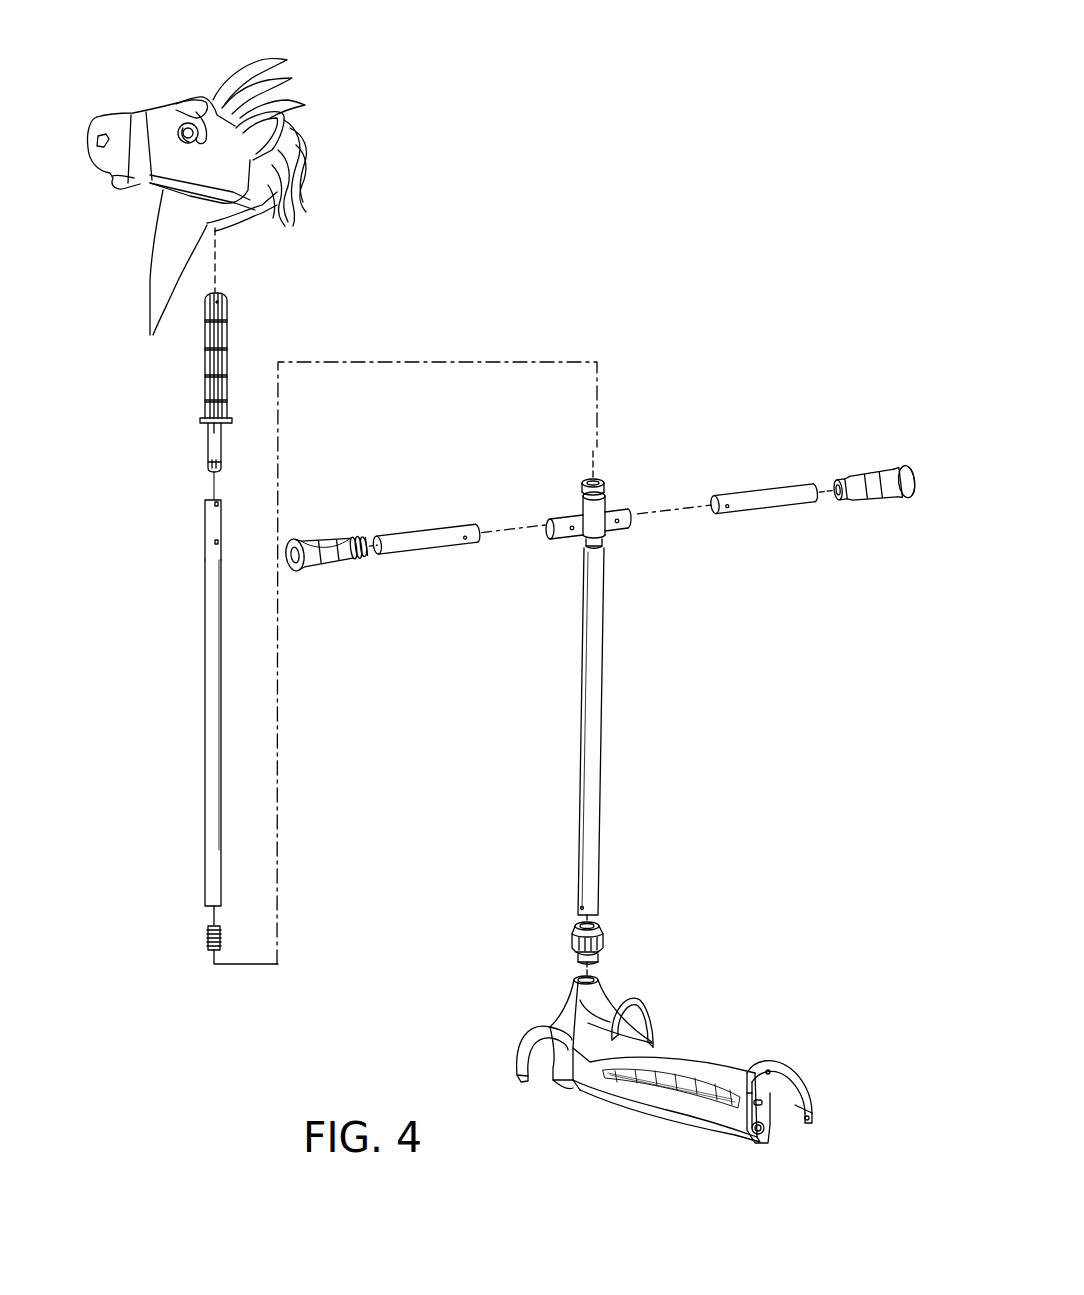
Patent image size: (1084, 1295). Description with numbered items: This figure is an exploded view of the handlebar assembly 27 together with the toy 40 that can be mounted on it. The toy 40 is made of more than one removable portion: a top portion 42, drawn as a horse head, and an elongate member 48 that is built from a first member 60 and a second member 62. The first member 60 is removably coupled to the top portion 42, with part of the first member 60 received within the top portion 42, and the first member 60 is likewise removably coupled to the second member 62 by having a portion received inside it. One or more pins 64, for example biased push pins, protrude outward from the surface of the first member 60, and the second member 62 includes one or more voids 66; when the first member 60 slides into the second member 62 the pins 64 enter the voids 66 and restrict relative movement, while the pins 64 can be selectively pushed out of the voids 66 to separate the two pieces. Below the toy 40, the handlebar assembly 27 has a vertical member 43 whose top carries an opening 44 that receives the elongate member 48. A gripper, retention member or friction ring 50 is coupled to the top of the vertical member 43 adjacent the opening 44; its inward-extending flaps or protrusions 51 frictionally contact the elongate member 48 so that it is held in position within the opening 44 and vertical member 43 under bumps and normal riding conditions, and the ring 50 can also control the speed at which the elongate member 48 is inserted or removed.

The toy 40 is at (353, 79).
The top portion 42 is at (192, 102).
The elongate member 48 is at (136, 544).
The first member 60 is at (205, 375).
The pins 64 is at (208, 440).
The voids 66 is at (205, 518).
The second member 62 is at (204, 677).
The handlebar assembly 27 is at (766, 527).
The opening 44 is at (583, 503).
The protrusions 51 is at (592, 478).
The ring 50 is at (598, 478).
The vertical member 43 is at (602, 698).